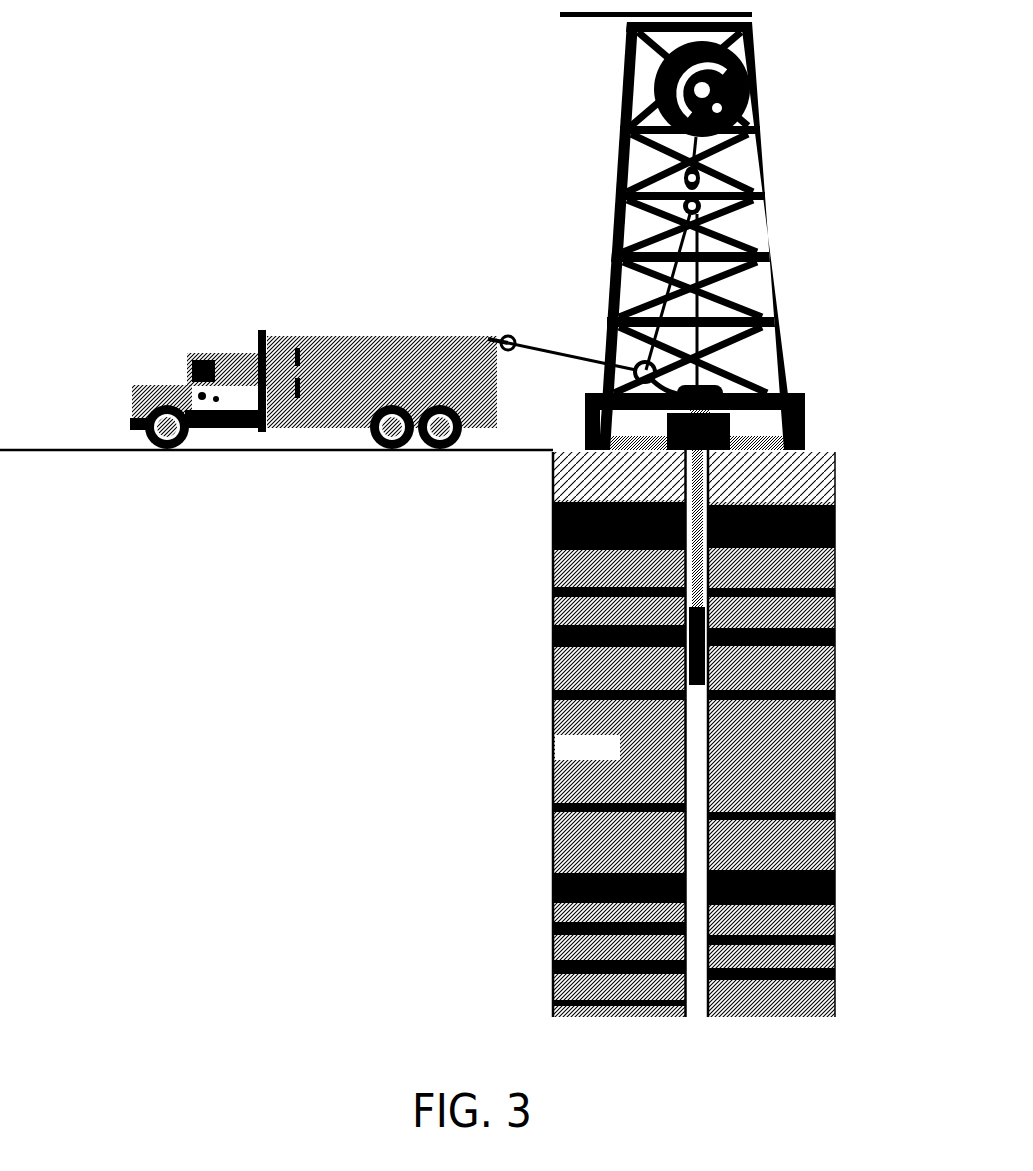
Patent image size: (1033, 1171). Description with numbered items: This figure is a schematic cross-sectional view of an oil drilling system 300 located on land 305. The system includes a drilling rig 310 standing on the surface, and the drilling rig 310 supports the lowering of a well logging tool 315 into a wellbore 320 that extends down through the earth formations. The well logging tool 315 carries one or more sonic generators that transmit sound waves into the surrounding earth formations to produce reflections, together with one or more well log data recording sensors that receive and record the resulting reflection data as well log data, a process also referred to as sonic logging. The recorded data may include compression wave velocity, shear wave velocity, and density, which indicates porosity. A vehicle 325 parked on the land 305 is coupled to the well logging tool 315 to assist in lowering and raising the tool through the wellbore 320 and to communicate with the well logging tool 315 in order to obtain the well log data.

The oil drilling system 300 is at (417, 158).
The land 305 is at (72, 450).
The drilling rig 310 is at (795, 255).
The well logging tool 315 is at (707, 650).
The wellbore 320 is at (695, 795).
The vehicle 325 is at (272, 328).